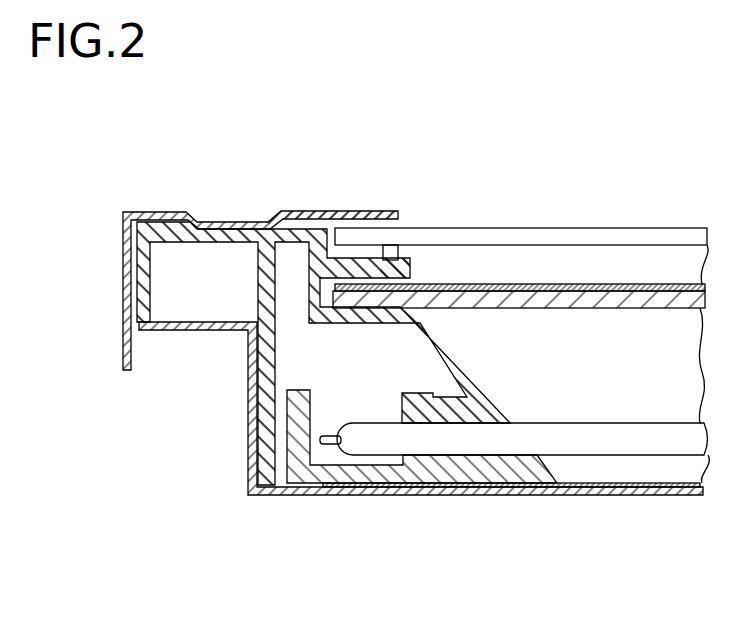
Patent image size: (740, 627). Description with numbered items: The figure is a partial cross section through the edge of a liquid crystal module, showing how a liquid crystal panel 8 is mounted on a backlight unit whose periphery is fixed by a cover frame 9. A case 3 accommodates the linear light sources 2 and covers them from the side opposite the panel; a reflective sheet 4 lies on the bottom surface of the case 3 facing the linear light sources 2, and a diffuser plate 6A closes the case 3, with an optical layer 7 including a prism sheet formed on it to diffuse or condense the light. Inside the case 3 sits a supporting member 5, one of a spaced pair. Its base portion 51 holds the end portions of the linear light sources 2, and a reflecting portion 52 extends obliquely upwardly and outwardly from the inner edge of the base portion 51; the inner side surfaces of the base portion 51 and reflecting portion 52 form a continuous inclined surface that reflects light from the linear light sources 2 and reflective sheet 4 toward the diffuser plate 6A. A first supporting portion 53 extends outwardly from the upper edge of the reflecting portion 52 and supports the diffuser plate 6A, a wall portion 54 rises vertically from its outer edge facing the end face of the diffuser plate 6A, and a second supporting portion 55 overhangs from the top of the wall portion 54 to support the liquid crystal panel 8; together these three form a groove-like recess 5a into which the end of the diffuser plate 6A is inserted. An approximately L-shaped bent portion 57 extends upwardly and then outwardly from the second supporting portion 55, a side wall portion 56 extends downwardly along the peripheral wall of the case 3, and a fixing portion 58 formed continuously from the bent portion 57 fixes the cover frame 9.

The linear light source 2 is at (598, 437).
The case 3 is at (247, 450).
The reflective sheet 4 is at (648, 486).
The supporting member 5 is at (253, 398).
The recess 5a is at (413, 276).
The diffuser plate 6A is at (629, 286).
The optical layer 7 is at (678, 292).
The liquid crystal panel 8 is at (558, 240).
The cover frame 9 is at (155, 213).
The base portion 51 is at (462, 460).
The reflecting portion 52 is at (452, 337).
The first supporting portion 53 is at (371, 317).
The wall portion 54 is at (313, 296).
The second supporting portion 55 is at (352, 270).
The side wall portion 56 is at (266, 340).
The bent portion 57 is at (285, 213).
The fixing portion 58 is at (218, 229).